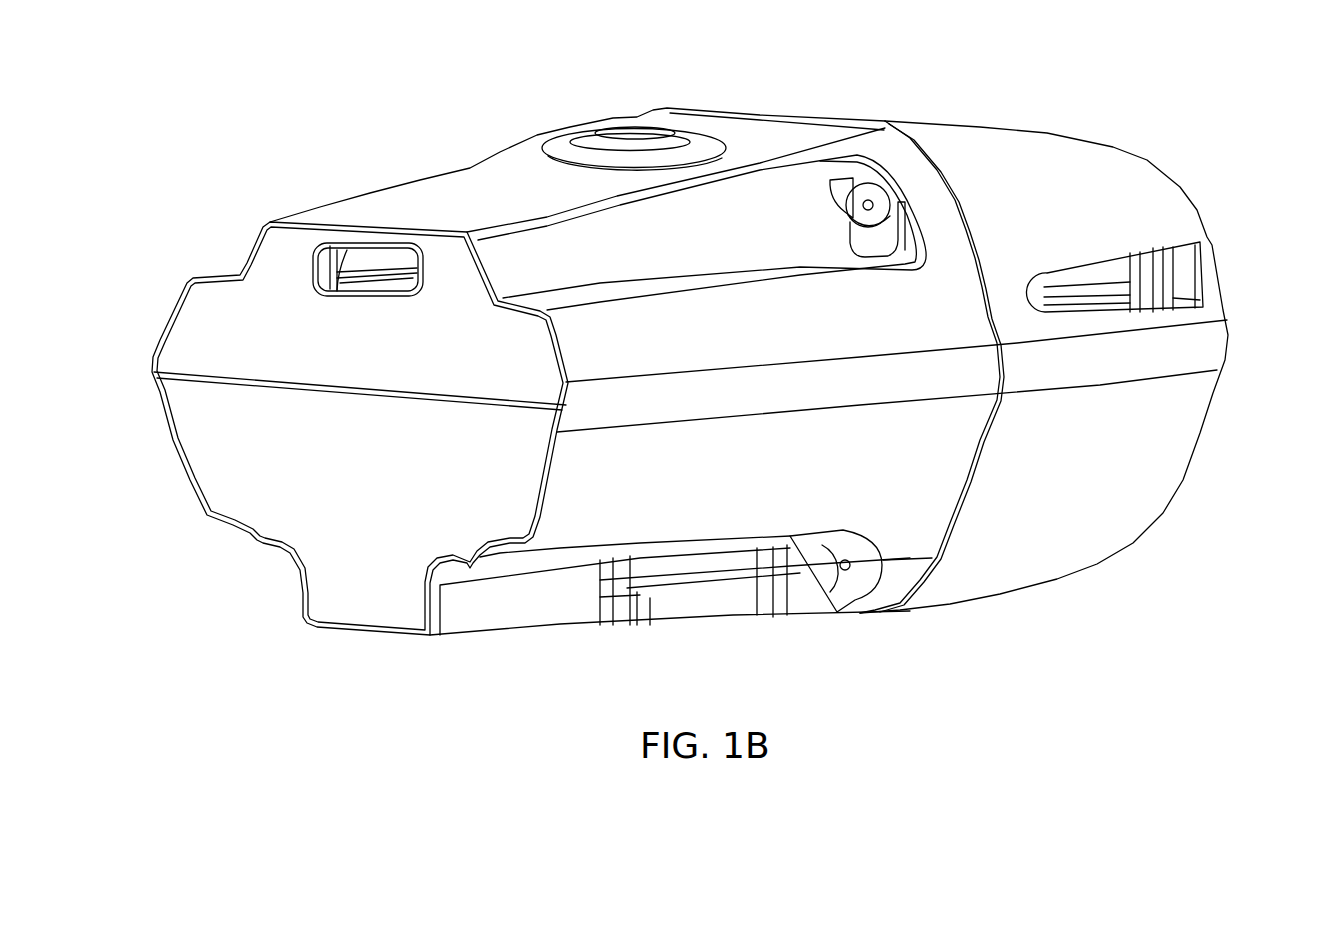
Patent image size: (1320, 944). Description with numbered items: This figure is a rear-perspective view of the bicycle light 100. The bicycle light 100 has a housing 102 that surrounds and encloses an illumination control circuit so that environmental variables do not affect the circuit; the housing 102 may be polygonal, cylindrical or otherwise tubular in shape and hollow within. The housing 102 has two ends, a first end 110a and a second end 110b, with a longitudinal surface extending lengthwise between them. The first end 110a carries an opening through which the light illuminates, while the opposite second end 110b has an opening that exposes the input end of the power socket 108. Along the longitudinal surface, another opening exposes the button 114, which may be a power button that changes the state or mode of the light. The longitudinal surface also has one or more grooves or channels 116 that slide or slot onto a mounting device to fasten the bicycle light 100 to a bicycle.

The bicycle light 100 is at (178, 156).
The housing 102 is at (727, 124).
The power socket 108 is at (362, 253).
The first end 110a is at (1217, 390).
The second end 110b is at (205, 455).
The button 114 is at (630, 130).
The groove or channel 116 is at (713, 600).